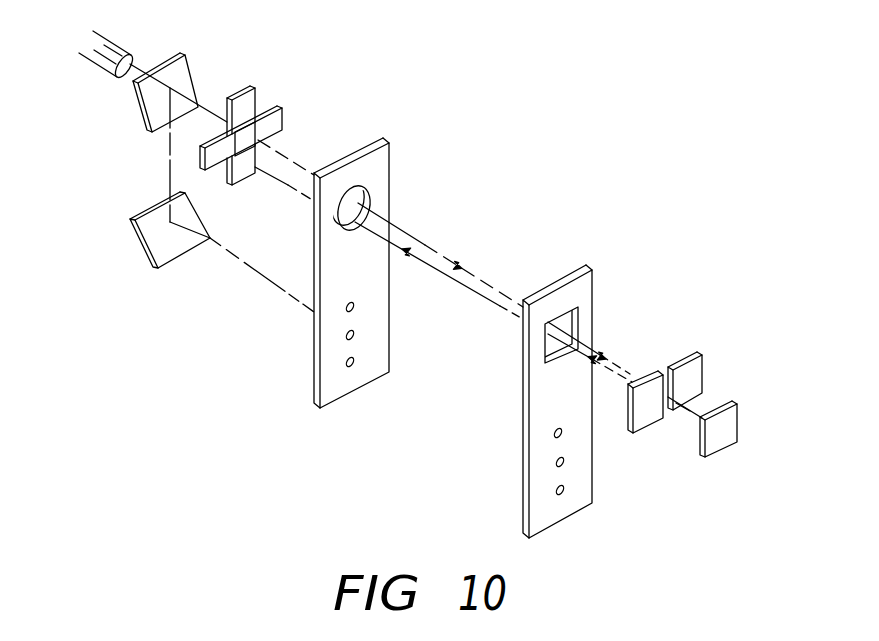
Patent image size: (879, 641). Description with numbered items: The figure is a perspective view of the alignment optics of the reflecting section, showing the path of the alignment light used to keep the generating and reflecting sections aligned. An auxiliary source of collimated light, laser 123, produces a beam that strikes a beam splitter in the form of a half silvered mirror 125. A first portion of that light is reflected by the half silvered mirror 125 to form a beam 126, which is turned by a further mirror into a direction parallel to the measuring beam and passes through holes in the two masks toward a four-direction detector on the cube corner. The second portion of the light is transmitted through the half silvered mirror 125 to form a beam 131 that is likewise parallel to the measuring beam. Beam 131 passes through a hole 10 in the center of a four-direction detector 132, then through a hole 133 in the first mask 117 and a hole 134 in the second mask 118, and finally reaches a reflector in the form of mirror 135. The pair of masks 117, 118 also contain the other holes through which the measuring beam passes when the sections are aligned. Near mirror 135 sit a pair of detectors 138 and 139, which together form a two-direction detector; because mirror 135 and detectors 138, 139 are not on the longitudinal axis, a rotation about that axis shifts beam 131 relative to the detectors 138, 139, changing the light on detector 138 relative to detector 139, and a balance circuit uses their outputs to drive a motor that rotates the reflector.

The hole 10 is at (250, 130).
The mask 117 is at (343, 395).
The mask 118 is at (523, 496).
The laser 123 is at (97, 72).
The half silvered mirror 125 is at (184, 82).
The beam 126 is at (153, 243).
The beam 131 is at (450, 262).
The 4-direction detector 132 is at (277, 127).
The hole 133 is at (362, 203).
The hole 134 is at (570, 328).
The mirror 135 is at (722, 443).
The detector 138 is at (688, 367).
The detector 139 is at (650, 423).